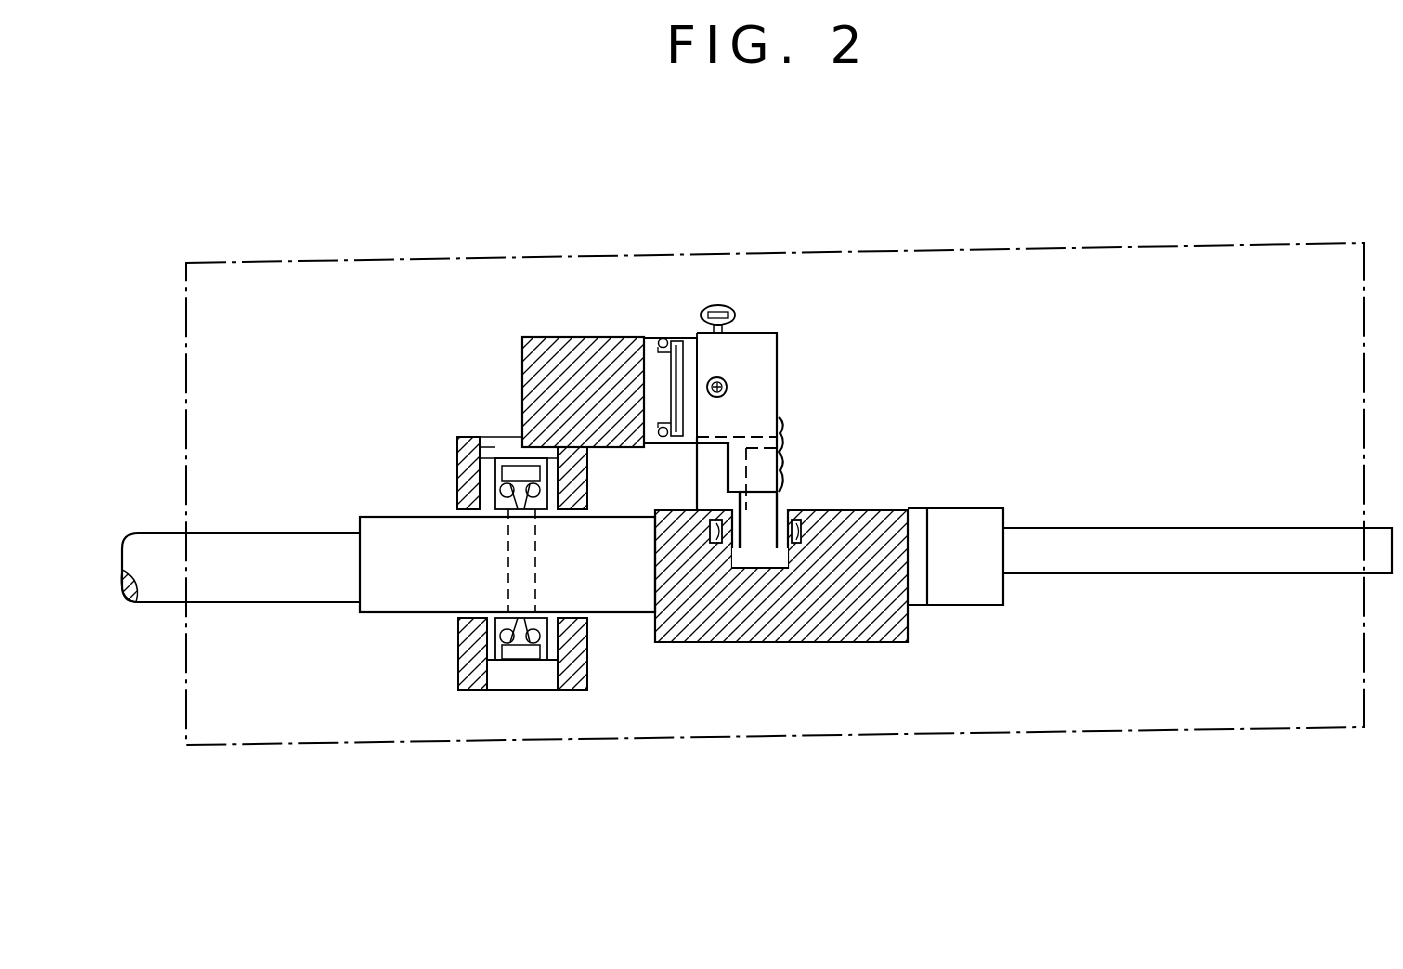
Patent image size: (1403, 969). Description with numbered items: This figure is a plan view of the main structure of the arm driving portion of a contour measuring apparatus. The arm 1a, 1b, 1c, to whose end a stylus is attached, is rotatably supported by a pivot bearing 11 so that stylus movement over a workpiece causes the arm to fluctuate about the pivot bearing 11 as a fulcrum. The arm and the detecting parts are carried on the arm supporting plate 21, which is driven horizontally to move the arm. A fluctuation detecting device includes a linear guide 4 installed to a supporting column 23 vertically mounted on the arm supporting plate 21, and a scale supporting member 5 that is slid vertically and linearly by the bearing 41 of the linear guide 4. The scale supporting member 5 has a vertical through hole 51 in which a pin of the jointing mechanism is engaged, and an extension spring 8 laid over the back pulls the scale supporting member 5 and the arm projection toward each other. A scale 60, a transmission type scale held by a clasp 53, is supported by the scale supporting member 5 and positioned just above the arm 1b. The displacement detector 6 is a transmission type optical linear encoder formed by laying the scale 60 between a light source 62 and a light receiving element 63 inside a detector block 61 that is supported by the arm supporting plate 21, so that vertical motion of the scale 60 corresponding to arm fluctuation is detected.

The arm 1a is at (158, 588).
The arm 1b is at (390, 600).
The arm 1c is at (1155, 560).
The linear guide 4 is at (650, 358).
The scale supporting member 5 is at (762, 346).
The displacement detector 6 is at (827, 703).
The extension spring 8 is at (728, 303).
The pivot bearing 11 is at (467, 467).
The arm supporting plate 21 is at (970, 245).
The supporting column 23 is at (530, 378).
The bearing 41 is at (655, 338).
The vertical through hole 51 is at (732, 378).
The clasp 53 is at (787, 443).
The scale 60 is at (767, 507).
The detector block 61 is at (760, 617).
The light source 62 is at (723, 545).
The light receiving element 63 is at (800, 533).